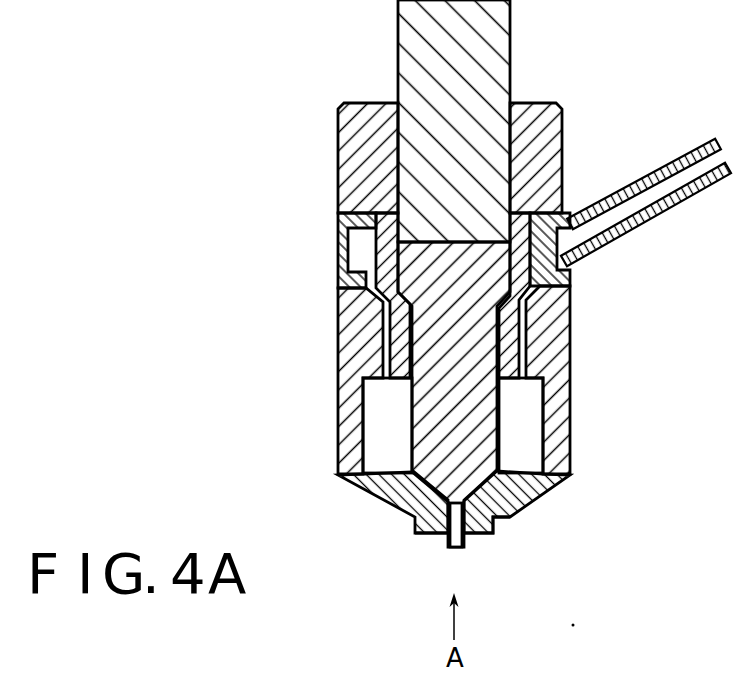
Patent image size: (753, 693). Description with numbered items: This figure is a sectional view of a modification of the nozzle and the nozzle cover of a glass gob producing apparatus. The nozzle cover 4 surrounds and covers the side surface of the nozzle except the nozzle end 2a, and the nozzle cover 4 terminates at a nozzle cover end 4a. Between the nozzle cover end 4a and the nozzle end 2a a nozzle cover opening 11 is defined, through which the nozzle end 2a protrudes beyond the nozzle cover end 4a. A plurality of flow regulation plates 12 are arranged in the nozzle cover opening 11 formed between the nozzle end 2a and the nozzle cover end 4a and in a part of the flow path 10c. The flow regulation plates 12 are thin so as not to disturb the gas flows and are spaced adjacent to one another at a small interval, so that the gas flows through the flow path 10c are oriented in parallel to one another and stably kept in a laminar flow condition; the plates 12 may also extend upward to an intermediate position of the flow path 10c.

The nozzle cover 4 is at (570, 361).
The nozzle cover end 4a is at (494, 520).
The flow path 10c is at (524, 431).
The flow regulation plates 12 is at (410, 493).
The nozzle end 2a is at (447, 541).
The nozzle cover opening 11 is at (470, 546).